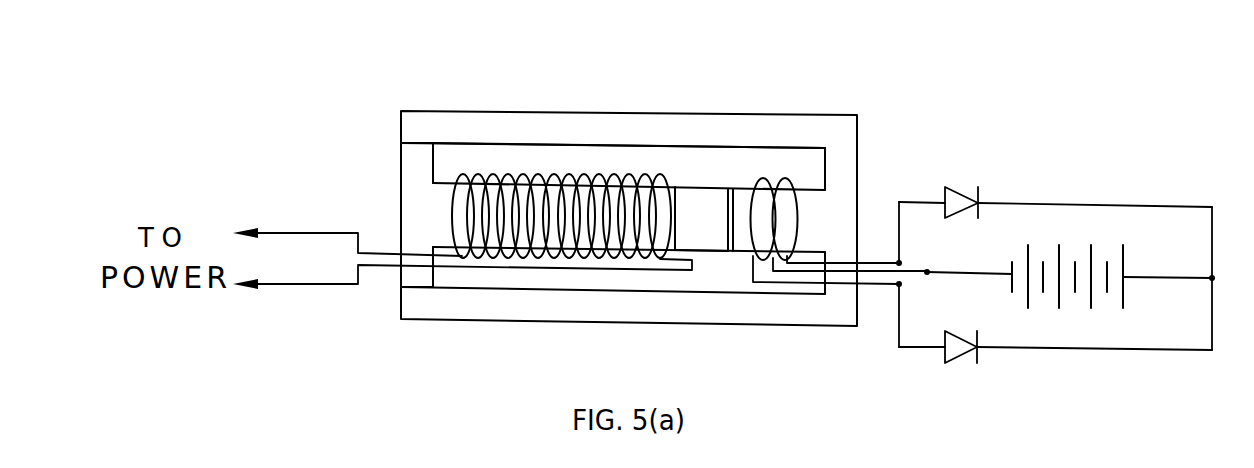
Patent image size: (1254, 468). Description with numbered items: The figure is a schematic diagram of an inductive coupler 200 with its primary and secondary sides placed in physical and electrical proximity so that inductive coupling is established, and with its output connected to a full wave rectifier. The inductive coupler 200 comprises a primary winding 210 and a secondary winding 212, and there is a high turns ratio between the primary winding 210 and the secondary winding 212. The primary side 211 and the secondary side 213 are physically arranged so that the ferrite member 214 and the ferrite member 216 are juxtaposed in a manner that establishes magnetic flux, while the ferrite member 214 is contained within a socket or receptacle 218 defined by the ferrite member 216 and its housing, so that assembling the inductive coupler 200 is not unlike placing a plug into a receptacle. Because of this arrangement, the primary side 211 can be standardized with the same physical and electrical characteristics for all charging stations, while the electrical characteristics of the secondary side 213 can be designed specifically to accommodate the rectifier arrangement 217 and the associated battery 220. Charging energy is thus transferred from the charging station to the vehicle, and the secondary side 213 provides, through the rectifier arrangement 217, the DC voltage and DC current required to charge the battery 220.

The inductive coupler 200 is at (376, 153).
The primary winding 210 is at (538, 177).
The primary side 211 is at (444, 229).
The secondary winding 212 is at (797, 184).
The secondary side 213 is at (848, 242).
The ferrite member 214 is at (707, 208).
The ferrite member 216 is at (738, 197).
The rectifier arrangement 217 is at (991, 177).
The socket or receptacle 218 is at (714, 176).
The battery 220 is at (1103, 248).